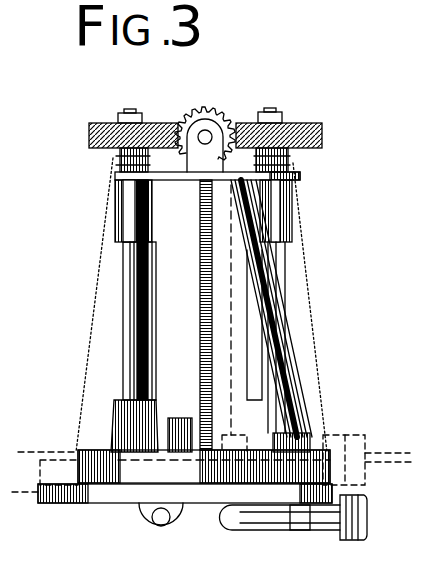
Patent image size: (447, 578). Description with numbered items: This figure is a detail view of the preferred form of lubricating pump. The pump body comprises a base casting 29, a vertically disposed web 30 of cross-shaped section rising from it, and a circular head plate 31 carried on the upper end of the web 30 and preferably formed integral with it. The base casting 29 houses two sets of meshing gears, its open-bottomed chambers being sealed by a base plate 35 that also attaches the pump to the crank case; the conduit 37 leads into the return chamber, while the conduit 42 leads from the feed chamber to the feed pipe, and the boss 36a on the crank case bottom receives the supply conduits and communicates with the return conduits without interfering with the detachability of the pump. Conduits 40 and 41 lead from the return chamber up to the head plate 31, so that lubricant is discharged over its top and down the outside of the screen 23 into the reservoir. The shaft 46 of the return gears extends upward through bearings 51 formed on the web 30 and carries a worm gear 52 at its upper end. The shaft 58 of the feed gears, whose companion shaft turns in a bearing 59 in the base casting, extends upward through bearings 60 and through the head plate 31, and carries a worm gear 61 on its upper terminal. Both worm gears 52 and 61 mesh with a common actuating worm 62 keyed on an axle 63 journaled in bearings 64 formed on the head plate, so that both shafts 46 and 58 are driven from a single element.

The worm gear 52 is at (102, 124).
The bearings 64 is at (183, 118).
The axle 63 is at (206, 135).
The actuating worm 62 is at (226, 111).
The worm gear 61 is at (324, 133).
The bearings 51 is at (116, 207).
The circular head plate 31 is at (168, 180).
The bearings 60 is at (287, 207).
The screen 23 is at (305, 282).
The shaft 58 is at (282, 297).
The shaft 46 is at (123, 341).
The vertically disposed web 30 is at (178, 380).
The conduit 40 is at (231, 352).
The conduit 41 is at (280, 342).
The base casting 29 is at (158, 450).
The boss 36a is at (356, 445).
The bearing 59 is at (178, 452).
The base plate 35 is at (111, 503).
The conduit 42 is at (162, 519).
The conduit 37 is at (273, 531).